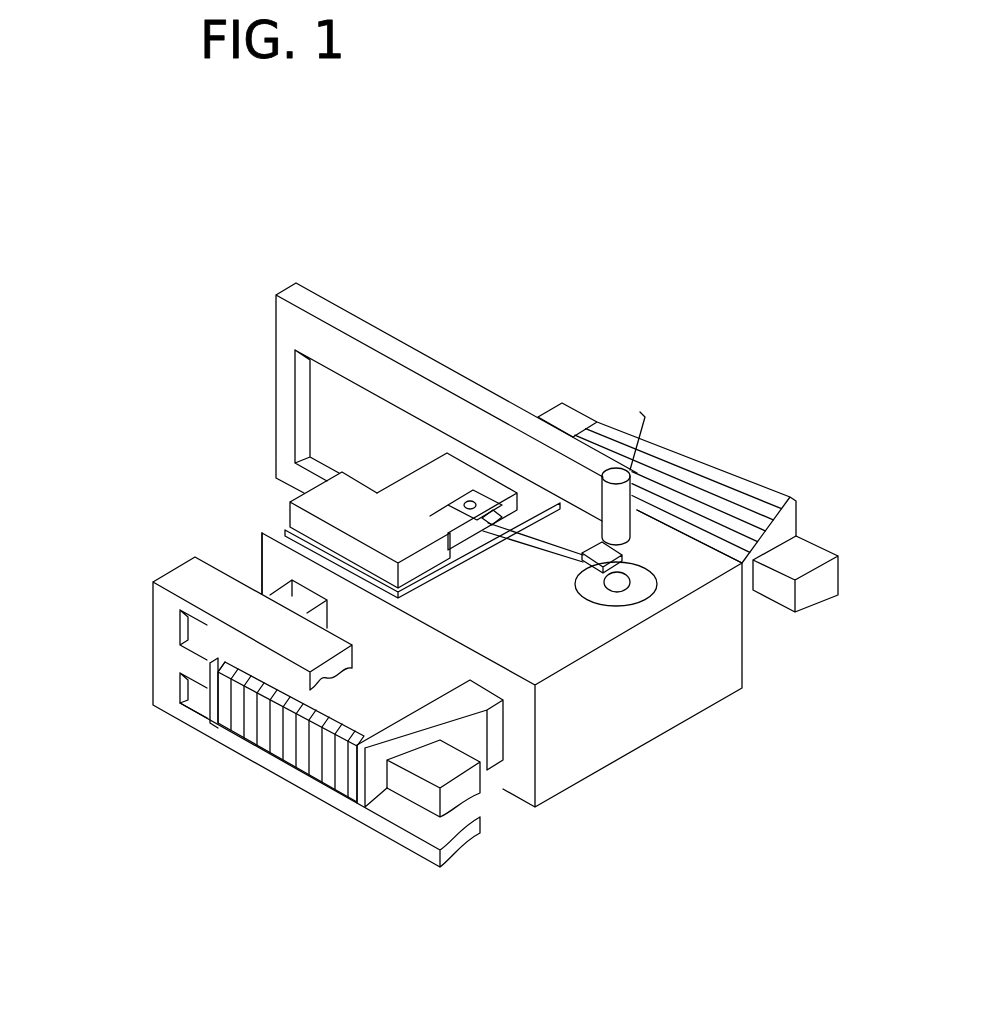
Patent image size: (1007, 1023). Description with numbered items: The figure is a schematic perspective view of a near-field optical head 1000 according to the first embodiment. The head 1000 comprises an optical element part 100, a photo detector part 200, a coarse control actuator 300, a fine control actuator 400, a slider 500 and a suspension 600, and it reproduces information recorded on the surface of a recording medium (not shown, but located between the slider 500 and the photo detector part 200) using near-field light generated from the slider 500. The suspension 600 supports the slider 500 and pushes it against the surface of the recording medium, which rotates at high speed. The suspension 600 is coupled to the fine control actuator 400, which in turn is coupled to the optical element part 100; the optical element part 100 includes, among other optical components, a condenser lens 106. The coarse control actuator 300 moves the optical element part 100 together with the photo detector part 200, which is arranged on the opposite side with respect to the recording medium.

The near-field optical head 1000 is at (118, 236).
The optical element part 100 is at (657, 695).
The condenser lens 106 is at (627, 587).
The photo detector part 200 is at (618, 475).
The coarse control actuator 300 is at (250, 707).
The fine control actuator 400 is at (437, 492).
The slider 500 is at (596, 567).
The suspension 600 is at (527, 528).